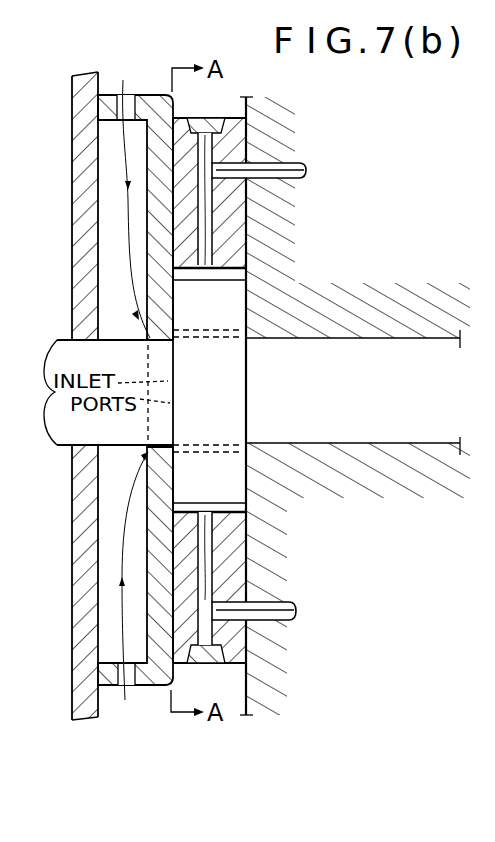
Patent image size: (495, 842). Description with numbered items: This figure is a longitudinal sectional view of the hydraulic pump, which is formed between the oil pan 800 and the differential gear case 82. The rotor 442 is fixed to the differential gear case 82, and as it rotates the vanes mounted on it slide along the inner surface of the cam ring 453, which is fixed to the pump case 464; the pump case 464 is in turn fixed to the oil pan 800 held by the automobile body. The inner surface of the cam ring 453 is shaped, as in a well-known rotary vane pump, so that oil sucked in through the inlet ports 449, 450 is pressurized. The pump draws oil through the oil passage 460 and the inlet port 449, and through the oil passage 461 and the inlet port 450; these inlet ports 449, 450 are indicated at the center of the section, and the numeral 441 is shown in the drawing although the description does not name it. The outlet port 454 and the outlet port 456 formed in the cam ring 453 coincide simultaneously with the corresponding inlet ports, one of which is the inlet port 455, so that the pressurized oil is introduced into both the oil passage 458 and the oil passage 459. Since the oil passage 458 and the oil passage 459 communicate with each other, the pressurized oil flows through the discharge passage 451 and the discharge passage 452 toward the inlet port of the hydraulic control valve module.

The oil pan 800 is at (73, 638).
The cam ring 453 is at (172, 142).
The oil passage 461 is at (137, 302).
The oil passage 460 is at (128, 483).
The valve body bore 441 is at (120, 447).
The inlet port 450 is at (157, 360).
The inlet port 449 is at (152, 430).
The rotor 442 is at (216, 395).
The differential gear case 82 is at (333, 325).
The outlet port 454 is at (247, 158).
The inlet port 455 is at (206, 587).
The discharge passage 451 is at (302, 166).
The oil passage 458 is at (300, 180).
The discharge passage 452 is at (296, 608).
The oil passage 459 is at (275, 623).
The outlet port 456 is at (252, 621).
The pump case 464 is at (174, 678).